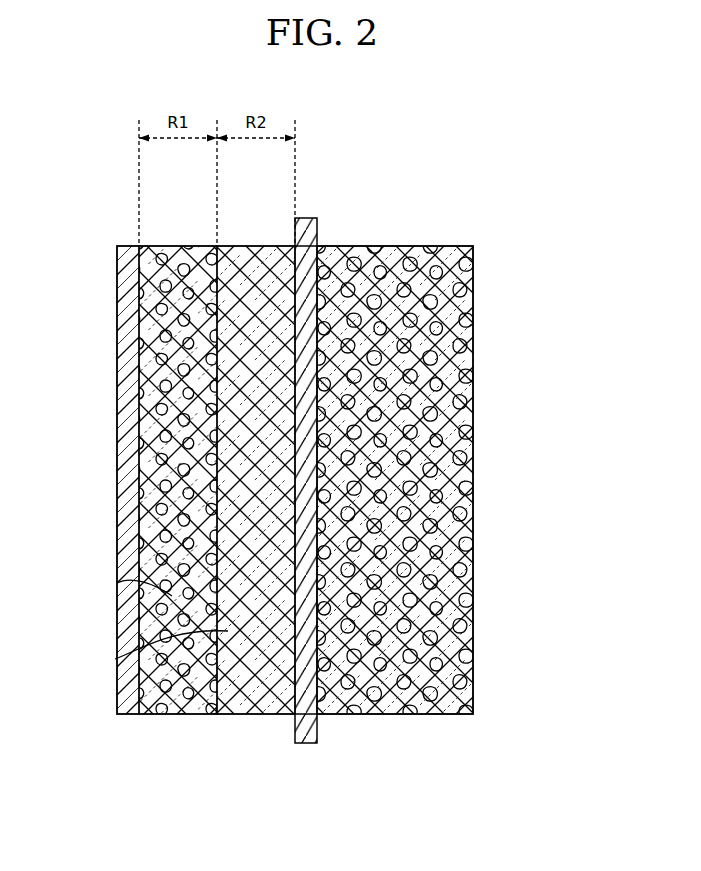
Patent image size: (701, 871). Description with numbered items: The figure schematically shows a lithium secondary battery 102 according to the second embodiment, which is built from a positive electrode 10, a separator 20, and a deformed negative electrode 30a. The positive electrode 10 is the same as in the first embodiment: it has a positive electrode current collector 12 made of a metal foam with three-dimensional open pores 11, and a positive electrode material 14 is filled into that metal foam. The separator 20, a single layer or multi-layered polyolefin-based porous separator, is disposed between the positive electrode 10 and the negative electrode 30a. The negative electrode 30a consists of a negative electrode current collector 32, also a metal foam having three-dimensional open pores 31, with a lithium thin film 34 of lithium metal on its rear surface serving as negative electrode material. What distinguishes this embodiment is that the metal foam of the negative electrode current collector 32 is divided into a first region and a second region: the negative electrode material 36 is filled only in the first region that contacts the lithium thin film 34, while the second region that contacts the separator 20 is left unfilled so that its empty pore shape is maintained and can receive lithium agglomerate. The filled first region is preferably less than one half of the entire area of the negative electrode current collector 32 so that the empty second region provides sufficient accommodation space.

The lithium secondary battery 102 is at (516, 203).
The positive electrode 10 is at (433, 548).
The open pores 11 is at (473, 562).
The positive electrode current collector 12 is at (368, 715).
The positive electrode material 14 is at (425, 715).
The separator 20 is at (295, 745).
The negative electrode 30a is at (206, 548).
The open pores 31 is at (117, 583).
The negative electrode current collector 32 is at (256, 527).
The lithium thin film 34 is at (132, 715).
The negative electrode material 36 is at (182, 715).